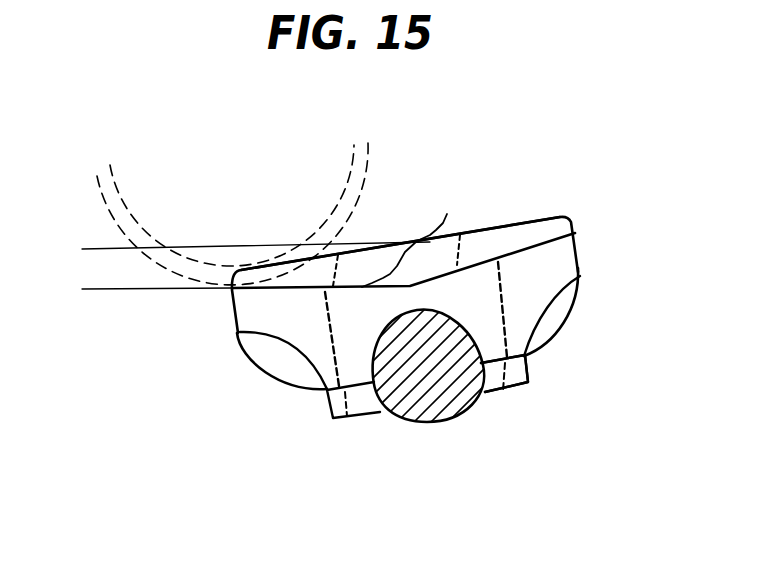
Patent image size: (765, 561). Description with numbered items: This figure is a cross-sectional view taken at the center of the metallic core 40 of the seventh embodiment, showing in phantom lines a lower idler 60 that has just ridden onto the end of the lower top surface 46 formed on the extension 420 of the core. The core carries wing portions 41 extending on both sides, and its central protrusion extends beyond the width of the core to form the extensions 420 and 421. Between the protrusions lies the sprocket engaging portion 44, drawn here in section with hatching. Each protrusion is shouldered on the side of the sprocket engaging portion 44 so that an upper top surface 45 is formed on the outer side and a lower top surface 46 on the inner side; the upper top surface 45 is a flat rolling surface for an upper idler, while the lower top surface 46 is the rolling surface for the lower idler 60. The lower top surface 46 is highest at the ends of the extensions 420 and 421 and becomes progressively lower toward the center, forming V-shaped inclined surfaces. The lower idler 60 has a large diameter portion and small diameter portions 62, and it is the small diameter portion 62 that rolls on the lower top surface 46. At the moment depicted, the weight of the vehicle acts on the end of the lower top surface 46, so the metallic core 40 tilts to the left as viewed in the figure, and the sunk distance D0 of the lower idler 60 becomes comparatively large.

The metallic core 40 is at (369, 434).
The wing portion 41 is at (528, 378).
The extension 420 is at (277, 331).
The extension 421 is at (568, 262).
The sprocket engaging portion 44 is at (433, 412).
The upper top surface 45 is at (531, 221).
The lower top surface 46 is at (413, 238).
The lower idler 60 is at (238, 190).
The small diameter portion 62 is at (354, 183).
The sunk distance D0 is at (89, 249).